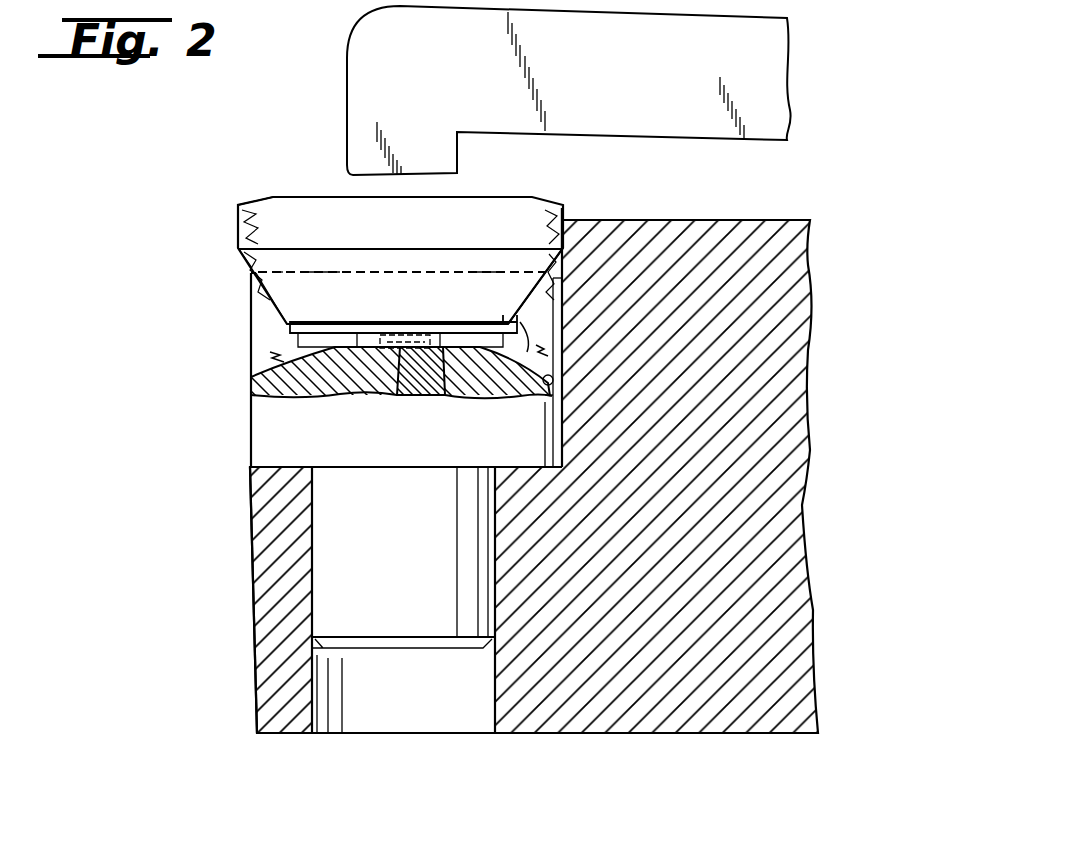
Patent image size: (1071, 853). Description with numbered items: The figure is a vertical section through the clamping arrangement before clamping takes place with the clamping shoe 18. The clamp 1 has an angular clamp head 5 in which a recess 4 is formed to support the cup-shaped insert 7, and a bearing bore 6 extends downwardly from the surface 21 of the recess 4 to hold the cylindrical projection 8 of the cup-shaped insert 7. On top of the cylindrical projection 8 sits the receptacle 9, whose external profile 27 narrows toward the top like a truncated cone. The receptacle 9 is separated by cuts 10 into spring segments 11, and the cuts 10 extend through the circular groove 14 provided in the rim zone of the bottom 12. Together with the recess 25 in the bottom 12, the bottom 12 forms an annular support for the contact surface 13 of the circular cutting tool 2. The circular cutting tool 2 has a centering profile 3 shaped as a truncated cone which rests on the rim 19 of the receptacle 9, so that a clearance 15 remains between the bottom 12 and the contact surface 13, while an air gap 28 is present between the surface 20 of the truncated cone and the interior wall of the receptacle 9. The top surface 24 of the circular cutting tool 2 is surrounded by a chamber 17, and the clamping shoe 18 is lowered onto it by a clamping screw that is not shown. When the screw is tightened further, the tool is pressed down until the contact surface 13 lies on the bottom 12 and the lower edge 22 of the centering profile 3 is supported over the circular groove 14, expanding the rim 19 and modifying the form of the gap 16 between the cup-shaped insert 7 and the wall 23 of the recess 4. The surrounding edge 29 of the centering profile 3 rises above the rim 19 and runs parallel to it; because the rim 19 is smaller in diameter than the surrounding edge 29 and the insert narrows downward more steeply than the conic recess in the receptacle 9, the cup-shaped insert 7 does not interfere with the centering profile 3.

The clamp 1 is at (808, 198).
The circular cutting tool 2 is at (237, 223).
The centering profile 3 is at (543, 300).
The recess 4 is at (563, 250).
The clamp head 5 is at (268, 657).
The bearing bore 6 is at (420, 713).
The cup-shaped insert 7 is at (249, 347).
The cylindrical projection 8 is at (397, 560).
The receptacle 9 is at (283, 262).
The cuts 10 is at (323, 262).
The spring segments 11 is at (260, 320).
The bottom 12 is at (348, 337).
The contact surface 13 is at (442, 393).
The circular groove 14 is at (300, 397).
The clearance 15 is at (407, 265).
The gap 16 is at (560, 277).
The chamber 17 is at (253, 200).
The clamping shoe 18 is at (367, 77).
The rim 19 is at (558, 206).
The surface of the truncated cone 20 is at (520, 400).
The surface 21 is at (270, 460).
The lower edge 22 is at (318, 335).
The wall 23 is at (557, 393).
The top surface 24 is at (317, 193).
The recess 25 is at (403, 395).
The external profile 27 is at (557, 297).
The air gap 28 is at (543, 343).
The surrounding edge 29 is at (243, 252).